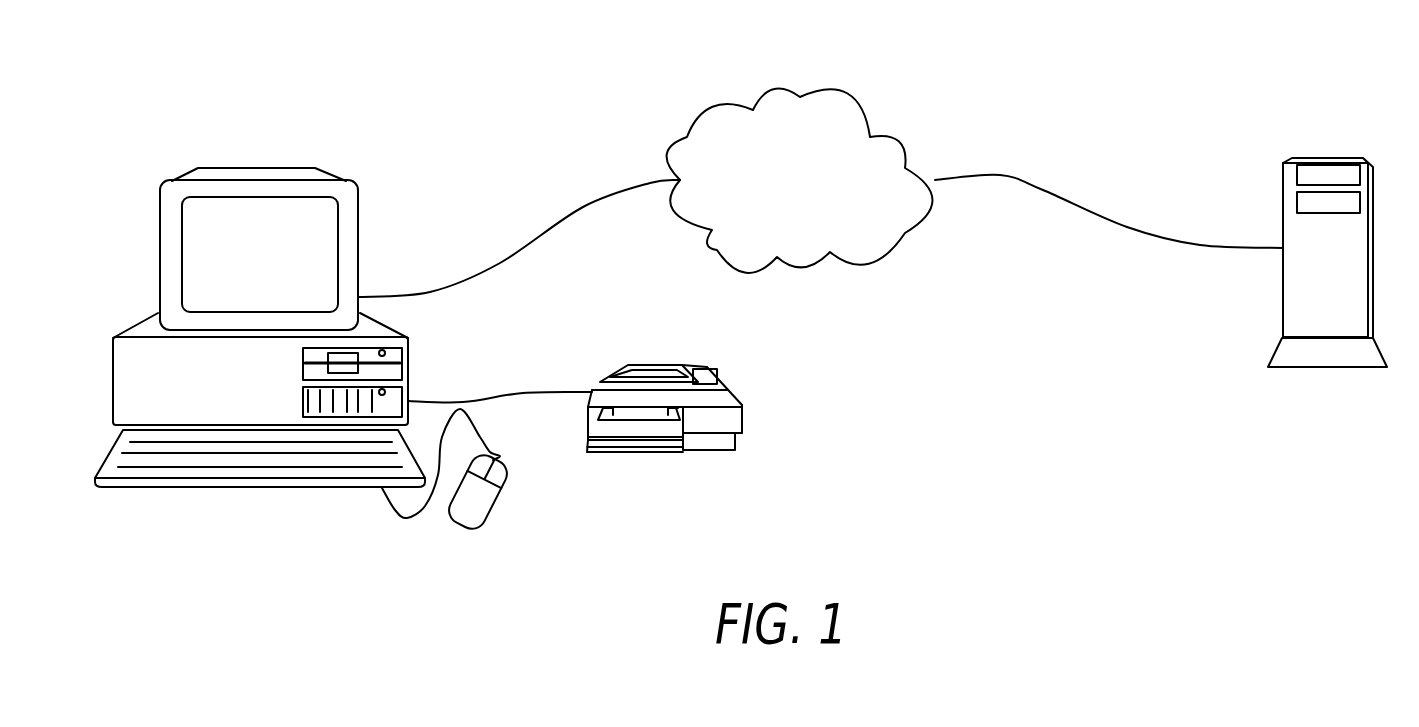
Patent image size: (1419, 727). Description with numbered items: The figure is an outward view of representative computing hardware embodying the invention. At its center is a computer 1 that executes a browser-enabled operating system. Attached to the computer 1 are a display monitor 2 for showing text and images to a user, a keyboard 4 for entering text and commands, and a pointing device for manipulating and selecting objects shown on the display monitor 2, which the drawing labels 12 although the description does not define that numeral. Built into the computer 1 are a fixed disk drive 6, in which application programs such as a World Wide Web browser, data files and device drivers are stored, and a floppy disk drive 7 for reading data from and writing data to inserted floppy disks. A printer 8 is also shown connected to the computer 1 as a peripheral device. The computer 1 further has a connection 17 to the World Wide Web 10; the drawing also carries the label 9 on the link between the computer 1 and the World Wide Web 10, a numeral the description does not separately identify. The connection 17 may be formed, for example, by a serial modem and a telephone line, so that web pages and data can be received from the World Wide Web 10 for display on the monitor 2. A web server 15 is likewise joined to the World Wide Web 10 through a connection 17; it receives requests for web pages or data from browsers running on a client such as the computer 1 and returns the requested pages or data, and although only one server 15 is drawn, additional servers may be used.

The computer 1 is at (339, 147).
The display monitor 2 is at (163, 241).
The keyboard 4 is at (148, 487).
The fixed disk drive 6 is at (338, 410).
The floppy disk drive 7 is at (396, 373).
The printer 8 is at (745, 414).
The communication link to World Wide Web 9 is at (538, 243).
The World Wide Web 10 is at (800, 97).
The mouse 12 is at (465, 530).
The web server 15 is at (1373, 191).
The connection 17 is at (1045, 190).